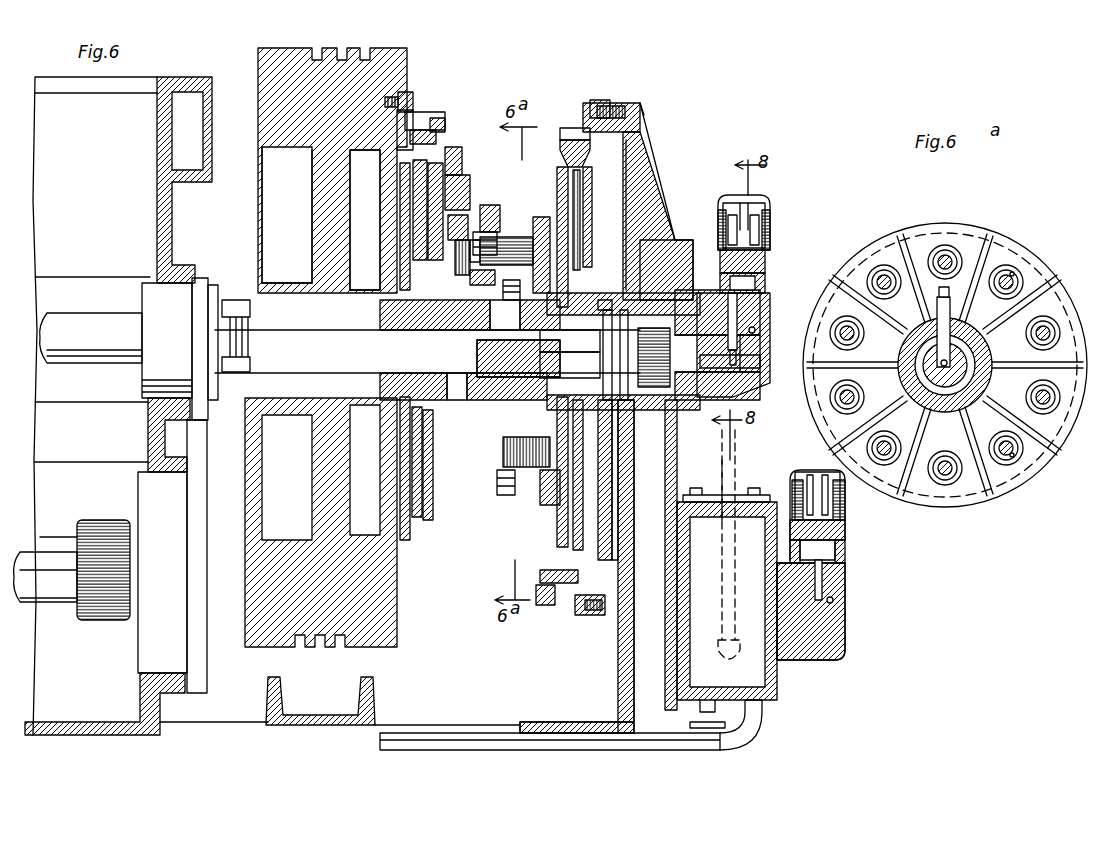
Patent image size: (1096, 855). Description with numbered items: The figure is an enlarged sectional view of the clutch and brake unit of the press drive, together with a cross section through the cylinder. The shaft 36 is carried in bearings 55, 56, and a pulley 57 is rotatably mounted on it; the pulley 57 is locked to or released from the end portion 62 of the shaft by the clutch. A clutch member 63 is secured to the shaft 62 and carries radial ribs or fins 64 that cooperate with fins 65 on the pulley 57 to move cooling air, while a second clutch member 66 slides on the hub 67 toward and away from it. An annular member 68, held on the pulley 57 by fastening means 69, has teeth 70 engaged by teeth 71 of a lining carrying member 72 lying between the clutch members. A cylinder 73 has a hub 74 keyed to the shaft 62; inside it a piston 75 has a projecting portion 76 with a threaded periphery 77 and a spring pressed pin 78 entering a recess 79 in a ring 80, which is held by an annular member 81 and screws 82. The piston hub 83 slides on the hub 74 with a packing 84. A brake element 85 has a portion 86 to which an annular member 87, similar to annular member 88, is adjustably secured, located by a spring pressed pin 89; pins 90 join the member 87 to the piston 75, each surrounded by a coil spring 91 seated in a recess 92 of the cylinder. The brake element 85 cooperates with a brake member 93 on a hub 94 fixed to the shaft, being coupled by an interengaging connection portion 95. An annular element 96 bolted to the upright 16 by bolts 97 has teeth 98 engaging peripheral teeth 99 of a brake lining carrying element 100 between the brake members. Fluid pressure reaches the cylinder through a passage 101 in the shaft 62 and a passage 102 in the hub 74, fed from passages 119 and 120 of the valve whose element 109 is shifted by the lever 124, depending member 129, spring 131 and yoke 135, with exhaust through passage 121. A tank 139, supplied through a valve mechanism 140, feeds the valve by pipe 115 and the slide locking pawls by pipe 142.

In FIG. 6, the upright 16 is at (615, 667).
In FIG. 6, the shaft 36 is at (70, 360).
In FIG. 6, the bearing 55 is at (170, 298).
In FIG. 6, the bearing 56 is at (655, 320).
In FIG. 6, the pulley 57 is at (385, 630).
In FIG. 6, the end portion of the shaft 62 is at (427, 353).
In FIG. 6A, the end portion of the shaft 62 is at (962, 370).
In FIG. 6, the clutch member 63 is at (345, 228).
In FIG. 6, the web 64 is at (340, 175).
In FIG. 6, the ribs or fins 65 is at (355, 258).
In FIG. 6, the clutch member 66 is at (447, 150).
In FIG. 6, the hub 67 is at (463, 363).
In FIG. 6, the annular member 68 is at (440, 118).
In FIG. 6, the fastening means 69 is at (410, 94).
In FIG. 6, the teeth or projections 70 is at (398, 128).
In FIG. 6, the teeth 71 is at (424, 128).
In FIG. 6, the lining carrying member 72 is at (398, 152).
In FIG. 6, the cylinder 73 is at (488, 205).
In FIG. 6A, the cylinder 73 is at (1010, 252).
In FIG. 6, the hub 74 is at (482, 321).
In FIG. 6A, the hub 74 is at (912, 348).
In FIG. 6, the piston 75 is at (482, 230).
In FIG. 6, the annular projecting portion 76 is at (470, 278).
In FIG. 6, the threaded periphery 77 is at (415, 200).
In FIG. 6, the spring pressed pin 78 is at (402, 215).
In FIG. 6, the recess 79 is at (455, 225).
In FIG. 6, the annular member or ring 80 is at (460, 178).
In FIG. 6, the annular member 81 is at (458, 215).
In FIG. 6, the screws 82 is at (462, 240).
In FIG. 6, the hub 83 is at (470, 321).
In FIG. 6, the packing 84 is at (500, 350).
In FIG. 6, the brake element 85 is at (575, 190).
In FIG. 6, the portion 86 is at (548, 220).
In FIG. 6, the annular member 87 is at (560, 240).
In FIG. 6, the annular member 88 is at (590, 220).
In FIG. 6, the spring pressed pin 89 is at (666, 270).
In FIG. 6, the laterally projecting pins 90 is at (512, 235).
In FIG. 6A, the laterally projecting pins 90 is at (1012, 280).
In FIG. 6, the coil spring 91 is at (508, 503).
In FIG. 6A, the coil spring 91 is at (1018, 280).
In FIG. 6, the recess 92 is at (578, 205).
In FIG. 6, the brake member 93 is at (600, 172).
In FIG. 6, the hub 94 is at (615, 438).
In FIG. 6, the interengaging connection portion 95 is at (641, 424).
In FIG. 6, the annular element 96 is at (600, 100).
In FIG. 6, the fastening bolts 97 is at (610, 104).
In FIG. 6, the teeth 98 is at (600, 148).
In FIG. 6, the peripheral teeth 99 is at (578, 130).
In FIG. 6, the brake lining carrying element 100 is at (610, 160).
In FIG. 6, the passage 101 is at (693, 437).
In FIG. 6A, the passage 101 is at (952, 390).
In FIG. 6, the passage 102 is at (570, 341).
In FIG. 6A, the passage 102 is at (982, 332).
In FIG. 6, the valve unit element 109 is at (772, 262).
In FIG. 6, the pipe 115 is at (738, 464).
In FIG. 6, the passage 119 is at (740, 355).
In FIG. 6, the passage 120 is at (728, 362).
In FIG. 6, the exhaust passage 121 is at (765, 326).
In FIG. 6, the lever 124 is at (775, 200).
In FIG. 6, the depending member 129 is at (770, 240).
In FIG. 6, the spring 131 is at (772, 218).
In FIG. 6, the yoke 135 is at (755, 200).
In FIG. 6, the tank 139 is at (755, 682).
In FIG. 6, the valve mechanism 140 is at (848, 544).
In FIG. 6, the pipe 142 is at (565, 745).